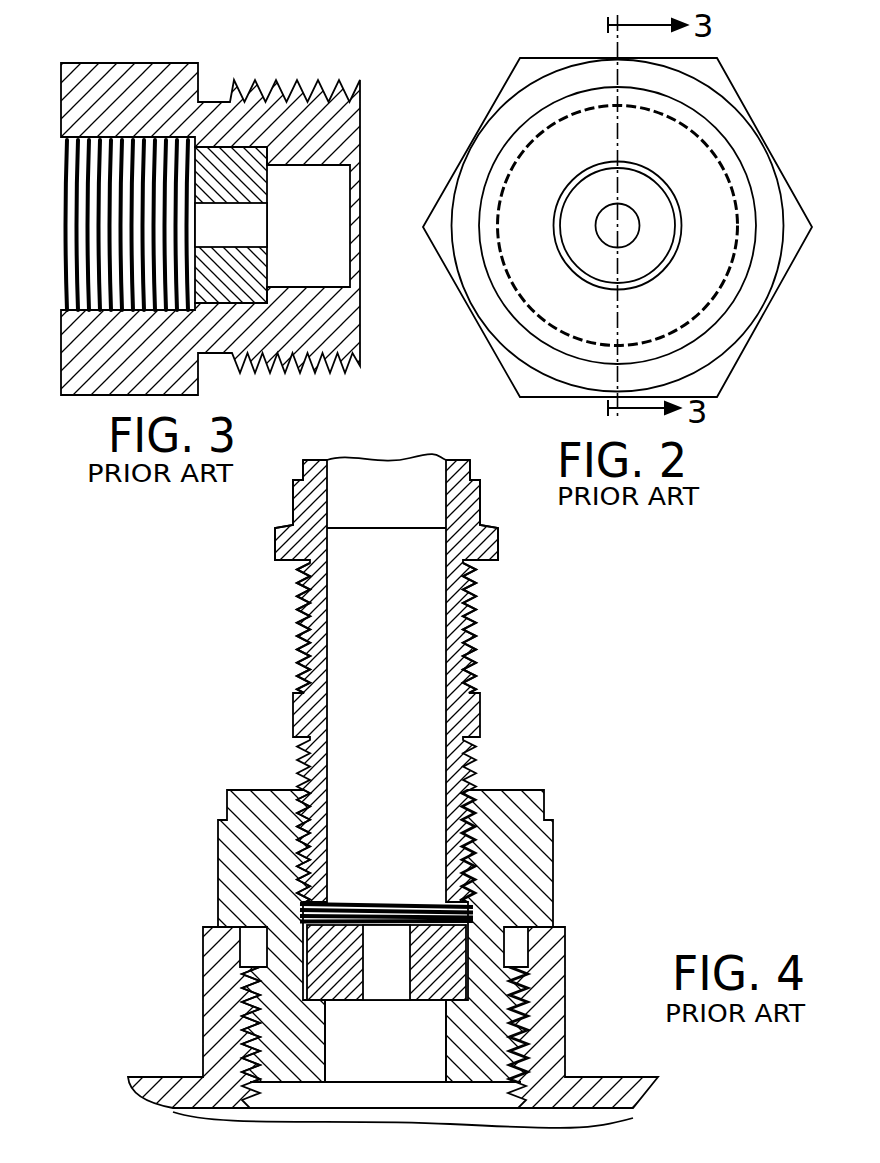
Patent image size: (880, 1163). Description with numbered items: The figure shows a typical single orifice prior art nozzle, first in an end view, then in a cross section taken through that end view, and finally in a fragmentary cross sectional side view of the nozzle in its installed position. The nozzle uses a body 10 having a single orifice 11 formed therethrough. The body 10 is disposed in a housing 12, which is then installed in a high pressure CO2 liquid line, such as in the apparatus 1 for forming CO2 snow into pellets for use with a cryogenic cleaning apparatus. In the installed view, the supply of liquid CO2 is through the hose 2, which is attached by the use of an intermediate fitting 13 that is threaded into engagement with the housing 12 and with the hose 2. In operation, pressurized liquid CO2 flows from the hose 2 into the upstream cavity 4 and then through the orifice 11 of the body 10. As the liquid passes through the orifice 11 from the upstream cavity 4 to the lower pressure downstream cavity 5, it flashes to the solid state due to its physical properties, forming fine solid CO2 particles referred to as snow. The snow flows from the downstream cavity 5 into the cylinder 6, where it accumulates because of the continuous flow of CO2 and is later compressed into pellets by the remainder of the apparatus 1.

In FIG. 4, the apparatus 1 is at (193, 1013).
In FIG. 4, the hose 2 is at (467, 492).
In FIG. 4, the upstream cavity 4 is at (412, 770).
In FIG. 4, the downstream cavity 5 is at (408, 1100).
In FIG. 4, the cylinder 6 is at (577, 1115).
In FIG. 3, the body 10 is at (258, 267).
In FIG. 2, the body 10 is at (633, 187).
In FIG. 4, the body 10 is at (453, 940).
In FIG. 3, the single orifice 11 is at (247, 218).
In FIG. 2, the single orifice 11 is at (637, 215).
In FIG. 4, the single orifice 11 is at (387, 942).
In FIG. 3, the housing 12 is at (307, 92).
In FIG. 2, the housing 12 is at (687, 88).
In FIG. 4, the housing 12 is at (229, 781).
In FIG. 4, the intermediate fitting 13 is at (467, 697).